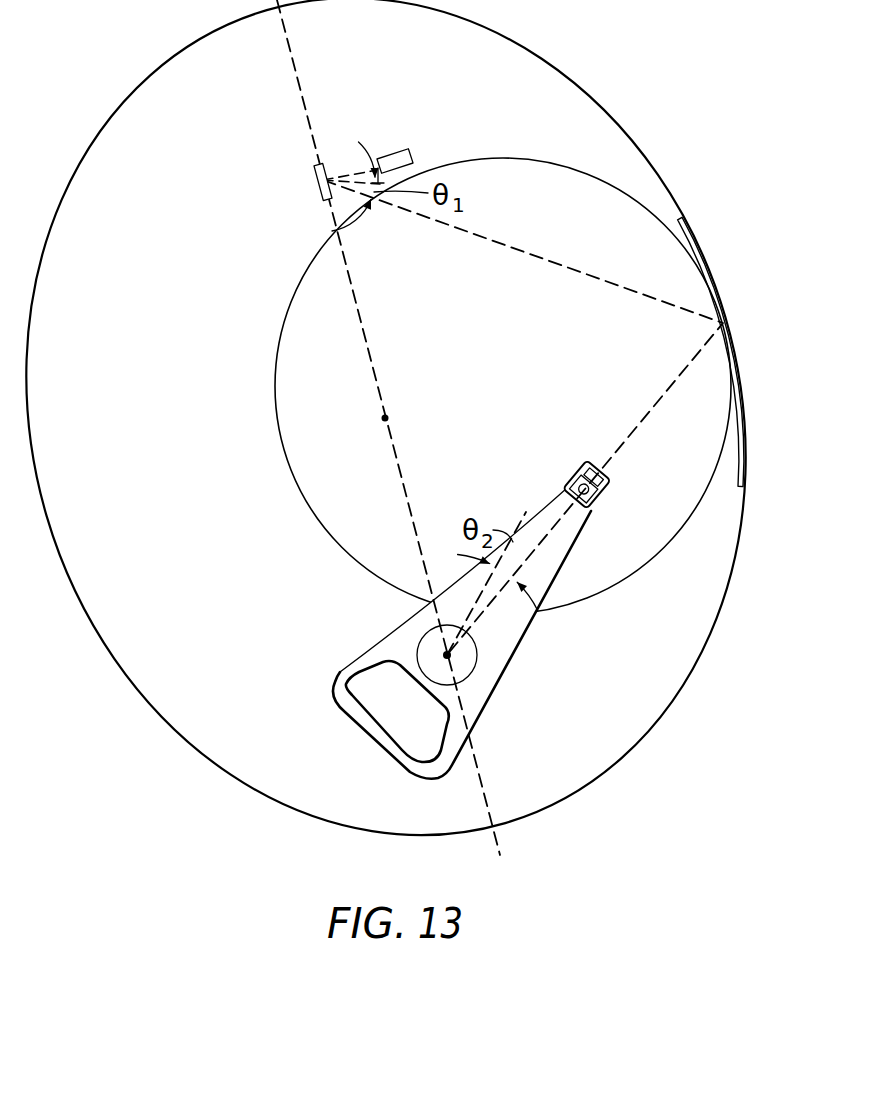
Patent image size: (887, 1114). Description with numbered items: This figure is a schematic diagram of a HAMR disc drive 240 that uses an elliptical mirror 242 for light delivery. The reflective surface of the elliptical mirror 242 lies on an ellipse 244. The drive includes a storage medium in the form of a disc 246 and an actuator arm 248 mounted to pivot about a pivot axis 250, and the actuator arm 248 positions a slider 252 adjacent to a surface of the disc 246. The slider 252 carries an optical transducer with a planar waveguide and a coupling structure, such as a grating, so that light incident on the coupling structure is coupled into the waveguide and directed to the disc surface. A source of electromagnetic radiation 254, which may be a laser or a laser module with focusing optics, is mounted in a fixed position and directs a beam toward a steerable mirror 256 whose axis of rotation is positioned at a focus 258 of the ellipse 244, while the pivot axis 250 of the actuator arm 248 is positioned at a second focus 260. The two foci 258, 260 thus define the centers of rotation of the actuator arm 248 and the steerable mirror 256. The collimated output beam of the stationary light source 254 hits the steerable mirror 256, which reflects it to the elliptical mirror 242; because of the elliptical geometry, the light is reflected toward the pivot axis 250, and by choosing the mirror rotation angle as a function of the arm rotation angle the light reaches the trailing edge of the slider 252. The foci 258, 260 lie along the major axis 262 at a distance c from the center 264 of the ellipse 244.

The HAMR disc drive 240 is at (677, 137).
The elliptical mirror 242 is at (746, 466).
The ellipse 244 is at (673, 701).
The disc 246 is at (287, 350).
The actuator arm 248 is at (507, 661).
The pivot axis 250 is at (446, 657).
The slider 252 is at (588, 472).
The source of electromagnetic radiation 254 is at (393, 153).
The steerable mirror 256 is at (332, 166).
The focus 258 is at (318, 180).
The second focus 260 is at (443, 653).
The major axis 262 is at (482, 787).
The center 264 is at (388, 418).